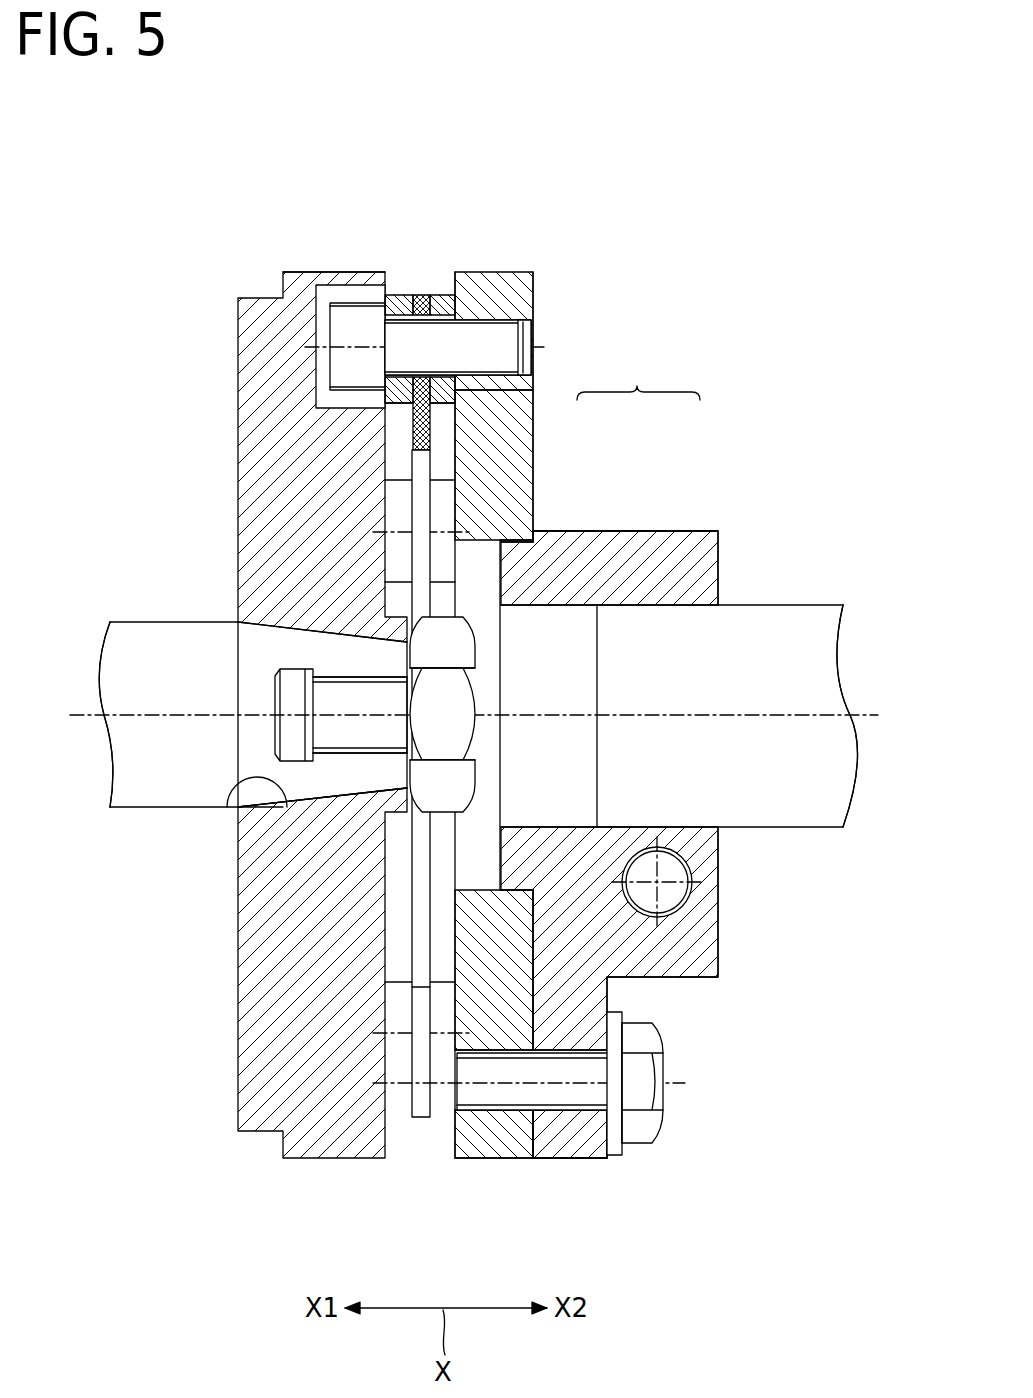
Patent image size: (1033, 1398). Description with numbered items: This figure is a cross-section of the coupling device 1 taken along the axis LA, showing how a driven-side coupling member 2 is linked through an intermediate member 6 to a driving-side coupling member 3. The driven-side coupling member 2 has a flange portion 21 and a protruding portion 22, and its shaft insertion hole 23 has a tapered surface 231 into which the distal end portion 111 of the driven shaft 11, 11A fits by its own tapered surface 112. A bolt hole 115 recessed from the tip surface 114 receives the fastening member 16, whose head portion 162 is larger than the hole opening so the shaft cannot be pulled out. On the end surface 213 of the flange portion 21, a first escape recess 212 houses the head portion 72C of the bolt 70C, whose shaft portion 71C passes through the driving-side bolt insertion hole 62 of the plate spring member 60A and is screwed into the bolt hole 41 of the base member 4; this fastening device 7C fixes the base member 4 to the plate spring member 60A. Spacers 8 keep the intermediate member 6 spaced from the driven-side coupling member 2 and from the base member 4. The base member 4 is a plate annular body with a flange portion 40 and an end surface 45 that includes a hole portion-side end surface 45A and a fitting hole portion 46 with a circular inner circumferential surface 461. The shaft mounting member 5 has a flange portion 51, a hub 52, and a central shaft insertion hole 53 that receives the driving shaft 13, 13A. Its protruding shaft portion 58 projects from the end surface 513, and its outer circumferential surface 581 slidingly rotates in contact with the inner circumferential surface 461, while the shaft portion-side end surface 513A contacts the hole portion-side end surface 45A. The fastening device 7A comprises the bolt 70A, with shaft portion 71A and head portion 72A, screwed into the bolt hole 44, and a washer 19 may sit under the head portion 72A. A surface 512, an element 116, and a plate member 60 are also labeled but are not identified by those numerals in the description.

The coupling device 1 is at (177, 123).
The driven-side coupling member 2 is at (288, 272).
The flange portion 21 is at (330, 272).
The first escape recess 212 is at (347, 285).
The end surface 213 is at (400, 423).
The protruding portion 22 is at (441, 616).
The shaft insertion hole 23 is at (240, 940).
The tapered surface 231 is at (240, 907).
The driving-side coupling member 3 is at (638, 377).
The base member 4 is at (535, 452).
The flange portion 40 is at (533, 403).
The bolt hole 41 is at (478, 300).
The bolt hole 44 is at (503, 1135).
The end surface 45 is at (548, 1135).
The hole portion-side end surface 45A is at (537, 927).
The fitting hole portion 46 is at (712, 560).
The inner circumferential surface 461 is at (655, 560).
The shaft mounting member 5 is at (667, 530).
The flange portion 51 is at (587, 1158).
The side surface of flange 51 512 is at (605, 1158).
The end surface 513 is at (530, 1125).
The shaft portion-side end surface 513A is at (537, 952).
The hub 52 is at (695, 978).
The shaft insertion hole 53 is at (720, 805).
The protruding shaft portion 58 is at (527, 528).
The outer circumferential surface 581 is at (537, 522).
The intermediate member 6 is at (421, 295).
The disc plate 60 is at (413, 1118).
The plate spring member 60A is at (428, 1118).
The driving-side bolt insertion hole 62 is at (395, 380).
The fastening device 7A is at (663, 1113).
The bolt 70A is at (663, 1077).
The shaft portion 71A is at (478, 1135).
The head portion 72A is at (628, 1152).
The fastening device 7C is at (535, 338).
The bolt 70C is at (330, 370).
The shaft portion 71C is at (524, 290).
The head portion 72C is at (330, 335).
The spacer 8 is at (400, 295).
The first shaft 11 is at (128, 622).
The driven shaft 11A is at (117, 807).
The distal end portion 111 is at (237, 802).
The tapered surface 112 is at (243, 793).
The tip surface 114 is at (365, 778).
The bolt hole 115 is at (283, 729).
The bolt 116 is at (283, 745).
The second shaft 13 is at (783, 605).
The driving shaft 13A is at (826, 827).
The fastening member 16 is at (400, 614).
The head portion 162 is at (427, 814).
The washer 19 is at (622, 1150).
The axis LA is at (83, 715).